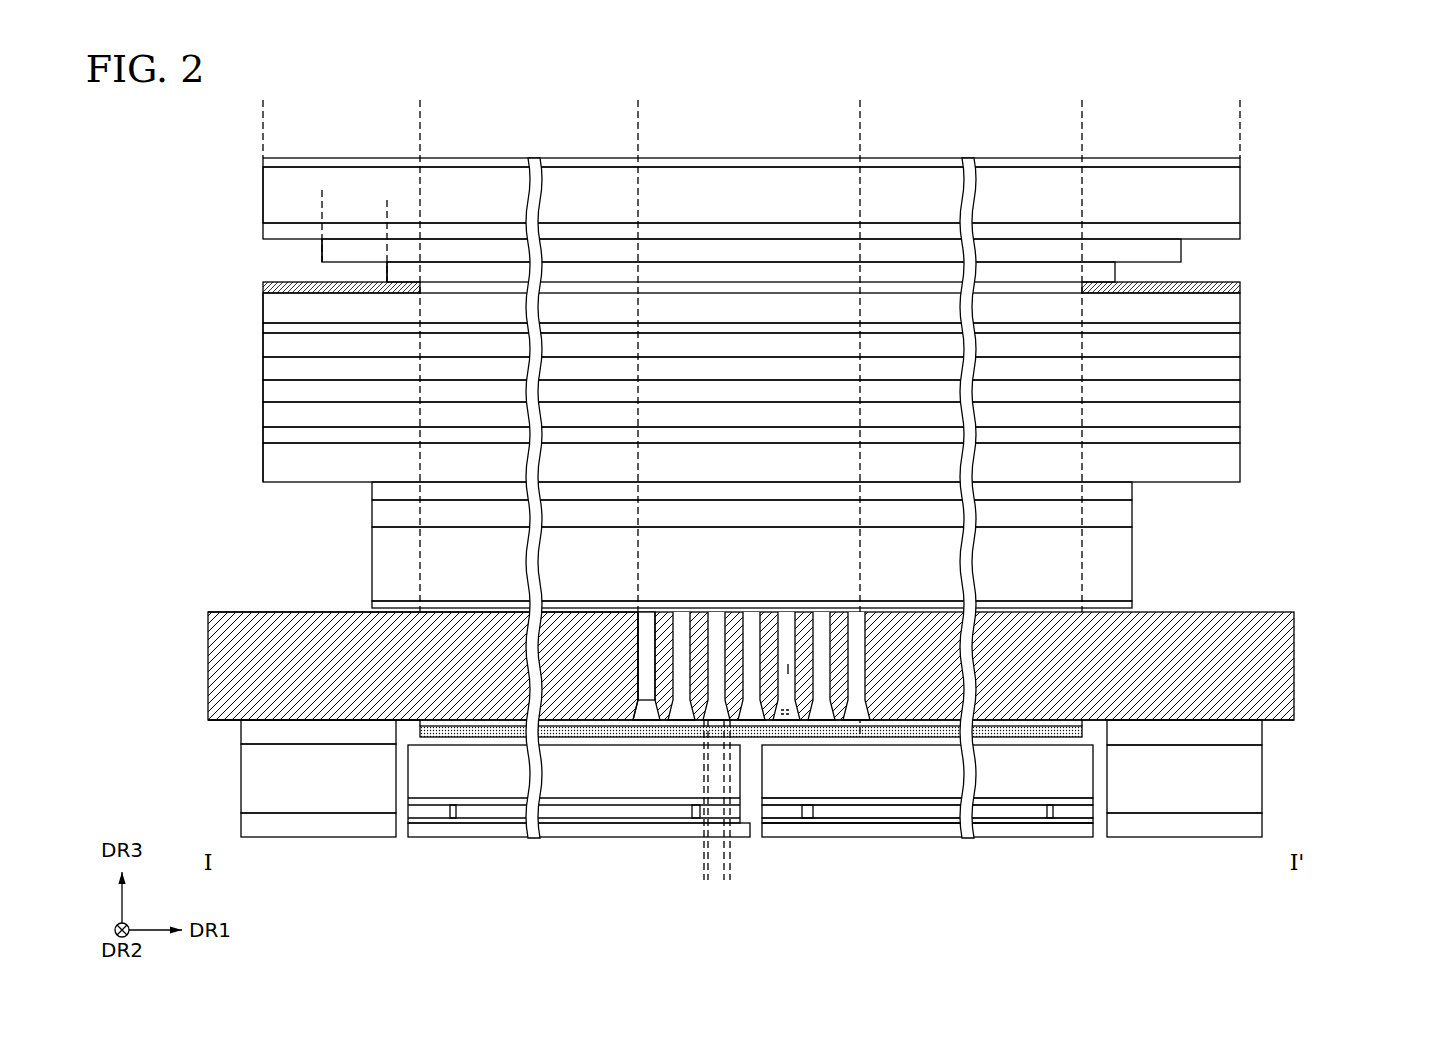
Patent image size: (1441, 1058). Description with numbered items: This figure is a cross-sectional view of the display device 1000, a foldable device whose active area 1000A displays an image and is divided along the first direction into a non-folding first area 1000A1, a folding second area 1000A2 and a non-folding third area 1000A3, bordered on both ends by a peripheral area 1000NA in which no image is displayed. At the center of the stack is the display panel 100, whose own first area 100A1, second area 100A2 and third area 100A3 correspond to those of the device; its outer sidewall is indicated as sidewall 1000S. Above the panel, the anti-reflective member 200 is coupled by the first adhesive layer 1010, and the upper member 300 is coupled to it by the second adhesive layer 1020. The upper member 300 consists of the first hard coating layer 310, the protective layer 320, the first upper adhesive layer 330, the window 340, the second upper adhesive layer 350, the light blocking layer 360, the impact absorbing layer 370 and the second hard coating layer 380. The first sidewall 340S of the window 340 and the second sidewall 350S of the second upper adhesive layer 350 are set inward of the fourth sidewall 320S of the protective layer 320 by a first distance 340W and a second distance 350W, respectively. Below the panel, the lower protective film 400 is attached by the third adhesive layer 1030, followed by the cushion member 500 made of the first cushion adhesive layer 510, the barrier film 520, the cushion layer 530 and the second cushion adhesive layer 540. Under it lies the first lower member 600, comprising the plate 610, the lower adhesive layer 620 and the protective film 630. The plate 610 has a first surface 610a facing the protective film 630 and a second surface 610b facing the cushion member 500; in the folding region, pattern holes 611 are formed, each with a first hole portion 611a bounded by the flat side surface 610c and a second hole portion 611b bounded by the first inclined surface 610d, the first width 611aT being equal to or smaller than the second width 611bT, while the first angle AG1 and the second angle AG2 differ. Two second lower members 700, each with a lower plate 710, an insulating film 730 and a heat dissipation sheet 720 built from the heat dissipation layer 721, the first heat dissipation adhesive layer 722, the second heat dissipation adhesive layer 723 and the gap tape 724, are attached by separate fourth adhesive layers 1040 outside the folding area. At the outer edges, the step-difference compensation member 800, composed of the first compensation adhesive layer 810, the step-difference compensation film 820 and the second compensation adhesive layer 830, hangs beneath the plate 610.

The display device 1000 is at (1342, 112).
The active area 1000A is at (296, 82).
The peripheral area 1000NA is at (263, 105).
The first area 1000A1 is at (420, 105).
The second area 1000A2 is at (638, 105).
The third area 1000A3 is at (860, 105).
The first area 100A1 is at (420, 138).
The second area 100A2 is at (638, 138).
The third area 100A3 is at (860, 138).
The upper member 300 is at (826, 248).
The first hard coating layer 310 is at (1226, 161).
The protective layer 320 is at (1226, 192).
The first upper adhesive layer 330 is at (1226, 231).
The window 340 is at (1160, 252).
The second upper adhesive layer 350 is at (1100, 270).
The light blocking layer 360 is at (1226, 286).
The impact absorbing layer 370 is at (1226, 307).
The second hard coating layer 380 is at (798, 333).
The second adhesive layer 1020 is at (1226, 345).
The anti-reflective member 200 is at (1226, 367).
The first adhesive layer 1010 is at (1226, 390).
The display panel 100 is at (1226, 412).
The third adhesive layer 1030 is at (1226, 434).
The lower protective film 400 is at (1226, 461).
The cushion member 500 is at (825, 546).
The first cushion adhesive layer 510 is at (1120, 490).
The barrier film 520 is at (1120, 515).
The cushion layer 530 is at (1120, 563).
The second cushion adhesive layer 540 is at (795, 592).
The first lower member 600 is at (784, 720).
The plate 610 is at (755, 720).
The lower adhesive layer 620 is at (1048, 723).
The protective film 630 is at (1057, 732).
The first surface 610a is at (228, 720).
The second surface 610b is at (248, 612).
The side surface 610c is at (681, 636).
The first inclined surface 610d is at (657, 716).
The first angle AG1 is at (637, 712).
The second angle AG2 is at (637, 672).
The pattern hole 611 is at (795, 814).
The first hole portion 611a is at (790, 669).
The second hole portion 611b is at (791, 722).
The first width 611aT is at (730, 878).
The second width 611bT is at (708, 846).
The second lower member 700 is at (771, 854).
The lower plate 710 is at (1085, 772).
The heat dissipation sheet 720 is at (927, 865).
The heat dissipation layer 721 is at (927, 812).
The first heat dissipation adhesive layer 722 is at (995, 800).
The second heat dissipation adhesive layer 723 is at (1025, 822).
The gap tape 724 is at (905, 892).
The insulating film 730 is at (927, 876).
The step-difference compensation member 800 is at (826, 780).
The first compensation adhesive layer 810 is at (1252, 737).
The step-difference compensation film 820 is at (1252, 783).
The second compensation adhesive layer 830 is at (797, 826).
The fourth adhesive layer 1040 is at (493, 745).
The fourth sidewall 320S is at (263, 190).
The first sidewall 340S is at (322, 247).
The second sidewall 350S is at (387, 270).
The first distance 340W is at (263, 202).
The second distance 350W is at (263, 213).
The side surface of display device 1000S is at (263, 412).